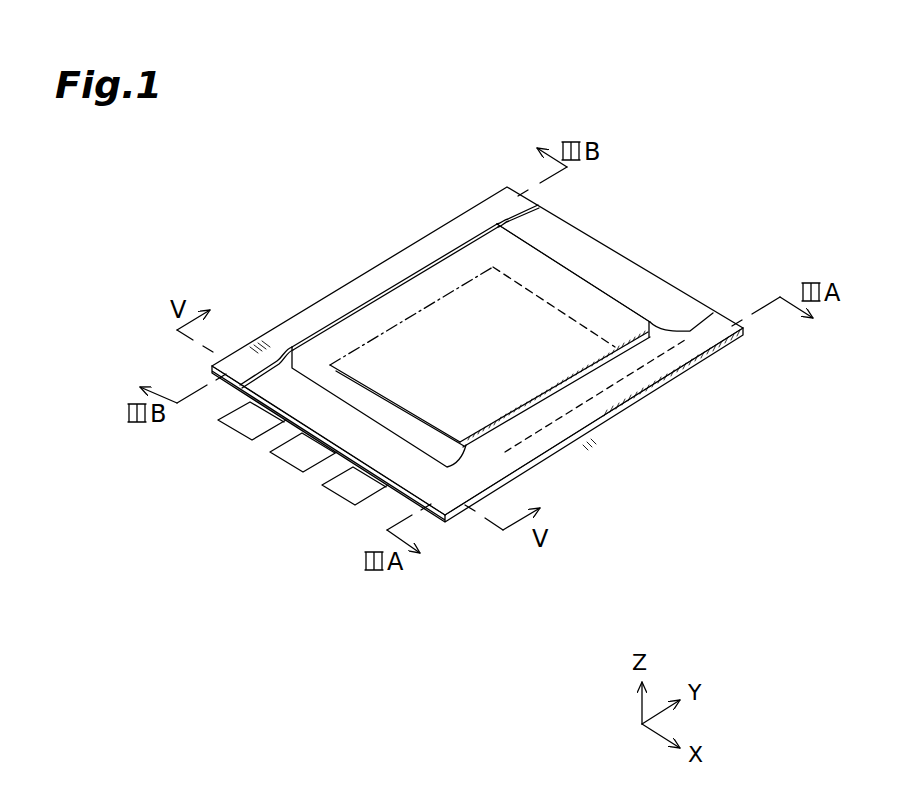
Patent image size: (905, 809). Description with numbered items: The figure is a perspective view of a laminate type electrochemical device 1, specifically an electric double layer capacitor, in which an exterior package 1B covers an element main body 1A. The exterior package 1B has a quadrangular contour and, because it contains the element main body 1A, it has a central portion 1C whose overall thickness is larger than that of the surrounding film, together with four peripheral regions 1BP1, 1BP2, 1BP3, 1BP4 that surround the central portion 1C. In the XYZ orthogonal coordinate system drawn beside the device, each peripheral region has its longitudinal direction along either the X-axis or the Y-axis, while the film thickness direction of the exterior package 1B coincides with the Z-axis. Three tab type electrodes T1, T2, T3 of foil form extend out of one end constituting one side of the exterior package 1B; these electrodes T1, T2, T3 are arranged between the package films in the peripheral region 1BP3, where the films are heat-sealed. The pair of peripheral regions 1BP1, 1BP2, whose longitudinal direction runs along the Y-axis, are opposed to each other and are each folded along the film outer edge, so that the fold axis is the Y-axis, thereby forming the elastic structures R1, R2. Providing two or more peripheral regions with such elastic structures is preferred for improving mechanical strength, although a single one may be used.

The electrochemical device 1 is at (733, 247).
The element main body 1A is at (600, 310).
The exterior package 1B is at (618, 340).
The peripheral region 1BP1 is at (604, 408).
The peripheral region 1BP2 is at (350, 298).
The peripheral region 1BP3 is at (405, 470).
The peripheral region 1BP4 is at (607, 272).
The central portion 1C is at (490, 357).
The elastic structure R1 is at (241, 358).
The elastic structure R2 is at (561, 437).
The tab type electrode T1 is at (352, 487).
The tab type electrode T2 is at (240, 428).
The tab type electrode T3 is at (292, 455).